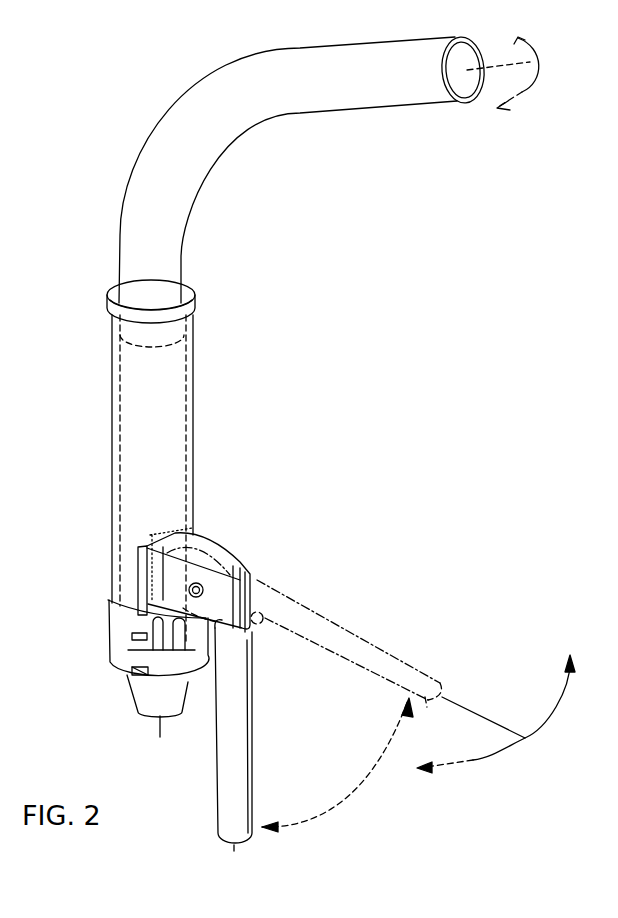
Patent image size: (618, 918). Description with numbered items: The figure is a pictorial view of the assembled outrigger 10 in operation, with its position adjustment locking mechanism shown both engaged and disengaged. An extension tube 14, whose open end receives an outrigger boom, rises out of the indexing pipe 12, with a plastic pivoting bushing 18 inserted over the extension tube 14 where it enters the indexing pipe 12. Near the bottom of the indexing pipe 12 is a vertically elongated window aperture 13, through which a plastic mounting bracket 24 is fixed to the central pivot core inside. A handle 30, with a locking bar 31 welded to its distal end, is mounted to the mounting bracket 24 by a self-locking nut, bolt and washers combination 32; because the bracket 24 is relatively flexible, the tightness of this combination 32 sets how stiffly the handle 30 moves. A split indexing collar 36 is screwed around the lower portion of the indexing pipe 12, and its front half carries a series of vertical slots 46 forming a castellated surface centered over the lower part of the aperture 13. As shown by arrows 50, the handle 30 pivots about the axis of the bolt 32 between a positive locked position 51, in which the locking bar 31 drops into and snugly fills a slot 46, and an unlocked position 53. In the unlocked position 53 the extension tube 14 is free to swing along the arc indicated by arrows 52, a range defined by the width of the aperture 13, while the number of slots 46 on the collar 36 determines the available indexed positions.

The outrigger 10 is at (102, 410).
The indexing pipe 12 is at (194, 422).
The vertically elongated window aperture 13 is at (153, 563).
The extension tube 14 is at (207, 173).
The pivoting bushing 18 is at (196, 297).
The mounting bracket 24 is at (193, 533).
The handle 30 is at (227, 810).
The locking bar extension 31 is at (193, 690).
The self-locking nut, bolt, and washers combination 32 is at (201, 585).
The indexing collar 36 is at (162, 670).
The vertical slots 46 is at (160, 637).
The arrows 50 is at (340, 798).
The positive locked position 51 is at (270, 837).
The arrows 52 is at (525, 92).
The unlocked position 53 is at (346, 657).